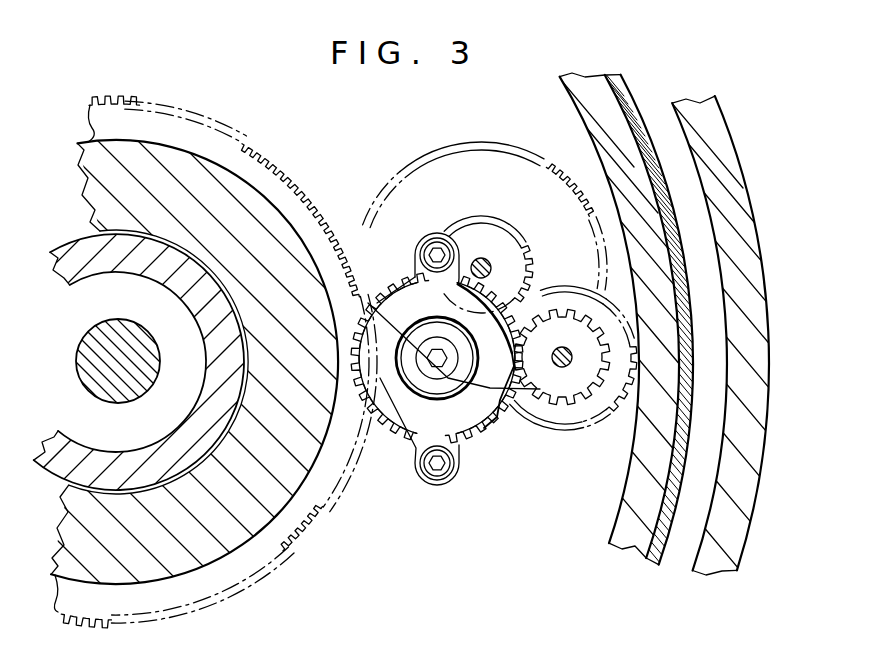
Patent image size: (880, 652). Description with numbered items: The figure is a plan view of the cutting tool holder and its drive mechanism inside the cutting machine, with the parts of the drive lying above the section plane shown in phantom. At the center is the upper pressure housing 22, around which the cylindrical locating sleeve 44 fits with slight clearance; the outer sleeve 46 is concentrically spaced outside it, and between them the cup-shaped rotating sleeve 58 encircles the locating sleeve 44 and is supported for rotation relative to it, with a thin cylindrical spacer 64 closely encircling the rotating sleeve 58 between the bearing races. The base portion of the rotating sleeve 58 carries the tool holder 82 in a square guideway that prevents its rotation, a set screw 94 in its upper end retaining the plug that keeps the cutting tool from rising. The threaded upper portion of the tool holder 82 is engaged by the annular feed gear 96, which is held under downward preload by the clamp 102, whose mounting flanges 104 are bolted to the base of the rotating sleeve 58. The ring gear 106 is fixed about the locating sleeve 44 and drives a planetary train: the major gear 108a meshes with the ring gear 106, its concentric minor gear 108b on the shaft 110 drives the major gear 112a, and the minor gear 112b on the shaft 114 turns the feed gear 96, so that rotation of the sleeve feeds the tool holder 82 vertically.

The upper pressure housing 22 is at (158, 277).
The locating sleeve 44 is at (198, 163).
The outer sleeve 46 is at (725, 143).
The rotating sleeve 58 is at (580, 93).
The cylindrical spacer 64 is at (623, 95).
The tool holder 82 is at (433, 391).
The set screw 94 is at (427, 343).
The feed gear 96 is at (487, 411).
The clamp 102 is at (413, 421).
The mounting flanges 104 is at (437, 240).
The ring gear 106 is at (263, 142).
The major gear 108a is at (546, 163).
The minor gear 108b is at (528, 253).
The shaft 110 is at (481, 266).
The major gear 112a is at (545, 292).
The minor gear 112b is at (557, 398).
The shaft 114 is at (562, 367).